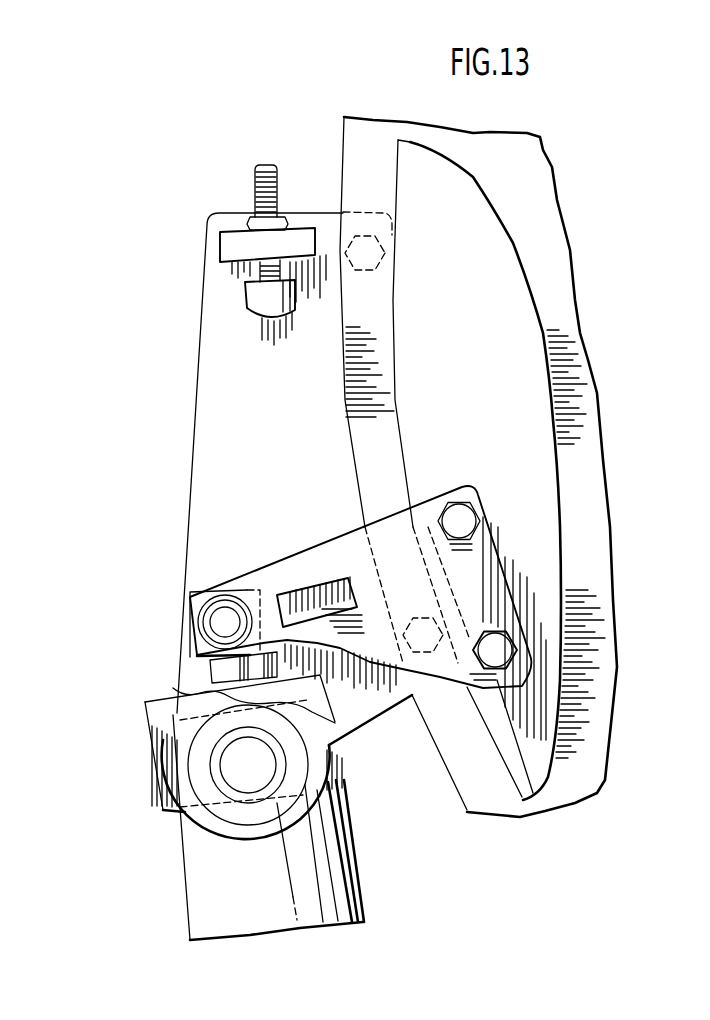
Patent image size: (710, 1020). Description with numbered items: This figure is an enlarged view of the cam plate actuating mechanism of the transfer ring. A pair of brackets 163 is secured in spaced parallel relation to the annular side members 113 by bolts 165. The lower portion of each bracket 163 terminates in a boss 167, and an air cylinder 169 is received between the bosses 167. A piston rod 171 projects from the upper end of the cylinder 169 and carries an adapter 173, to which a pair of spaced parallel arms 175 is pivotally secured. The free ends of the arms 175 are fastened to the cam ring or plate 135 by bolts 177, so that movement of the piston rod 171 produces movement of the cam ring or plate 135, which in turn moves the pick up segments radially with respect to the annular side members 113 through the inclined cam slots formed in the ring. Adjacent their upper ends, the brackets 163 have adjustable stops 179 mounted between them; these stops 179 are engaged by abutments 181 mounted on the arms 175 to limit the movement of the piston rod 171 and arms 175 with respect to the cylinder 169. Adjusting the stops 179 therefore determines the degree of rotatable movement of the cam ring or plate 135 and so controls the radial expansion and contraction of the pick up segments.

The annular side member 113 is at (457, 750).
The cam ring or plate 135 is at (543, 662).
The bracket 163 is at (235, 371).
The bolt 165 is at (380, 253).
The boss 167 is at (170, 737).
The air cylinder 169 is at (317, 833).
The piston rod 171 is at (210, 668).
The adapter 173 is at (190, 652).
The arm 175 is at (324, 553).
The bolt 177 is at (488, 648).
The adjustable stop 179 is at (257, 293).
The abutment 181 is at (285, 596).